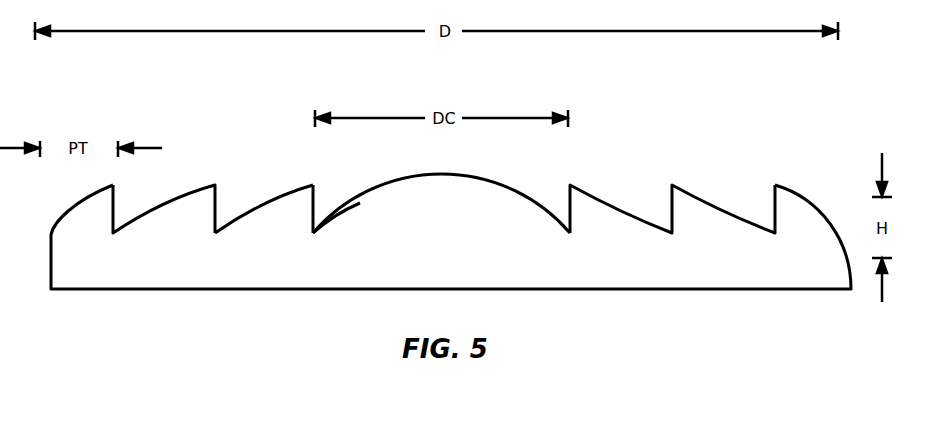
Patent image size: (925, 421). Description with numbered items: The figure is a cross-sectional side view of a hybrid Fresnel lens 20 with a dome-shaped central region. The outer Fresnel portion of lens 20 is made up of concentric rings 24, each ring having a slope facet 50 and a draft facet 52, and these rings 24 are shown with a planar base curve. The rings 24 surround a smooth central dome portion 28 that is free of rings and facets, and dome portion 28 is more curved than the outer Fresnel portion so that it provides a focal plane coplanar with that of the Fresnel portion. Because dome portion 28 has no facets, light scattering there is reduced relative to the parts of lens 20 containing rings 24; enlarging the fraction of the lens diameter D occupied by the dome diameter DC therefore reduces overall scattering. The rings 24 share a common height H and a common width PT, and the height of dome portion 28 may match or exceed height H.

The lens 20 is at (78, 273).
The concentric rings 24 is at (851, 240).
The dome portion 28 is at (314, 240).
The slope facets 50 is at (240, 213).
The draft facets 52 is at (318, 212).